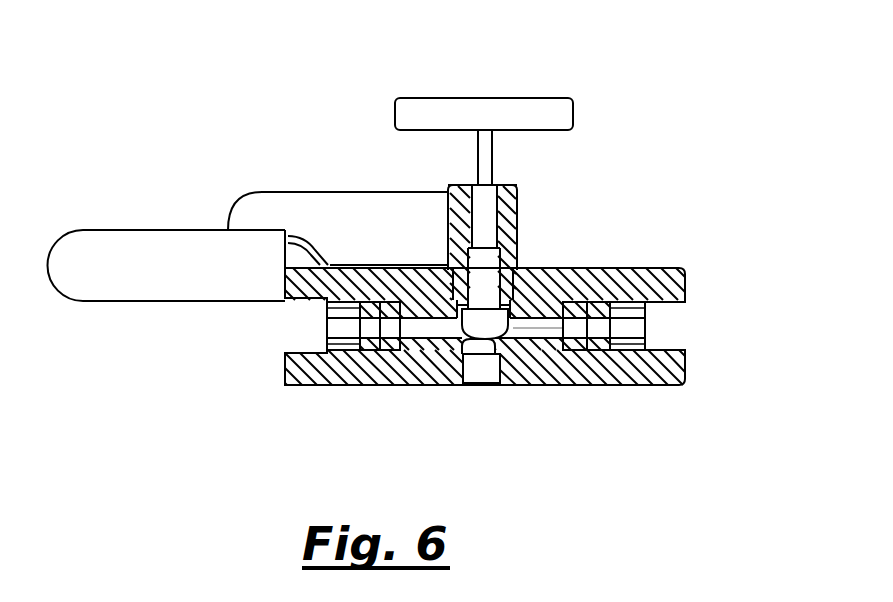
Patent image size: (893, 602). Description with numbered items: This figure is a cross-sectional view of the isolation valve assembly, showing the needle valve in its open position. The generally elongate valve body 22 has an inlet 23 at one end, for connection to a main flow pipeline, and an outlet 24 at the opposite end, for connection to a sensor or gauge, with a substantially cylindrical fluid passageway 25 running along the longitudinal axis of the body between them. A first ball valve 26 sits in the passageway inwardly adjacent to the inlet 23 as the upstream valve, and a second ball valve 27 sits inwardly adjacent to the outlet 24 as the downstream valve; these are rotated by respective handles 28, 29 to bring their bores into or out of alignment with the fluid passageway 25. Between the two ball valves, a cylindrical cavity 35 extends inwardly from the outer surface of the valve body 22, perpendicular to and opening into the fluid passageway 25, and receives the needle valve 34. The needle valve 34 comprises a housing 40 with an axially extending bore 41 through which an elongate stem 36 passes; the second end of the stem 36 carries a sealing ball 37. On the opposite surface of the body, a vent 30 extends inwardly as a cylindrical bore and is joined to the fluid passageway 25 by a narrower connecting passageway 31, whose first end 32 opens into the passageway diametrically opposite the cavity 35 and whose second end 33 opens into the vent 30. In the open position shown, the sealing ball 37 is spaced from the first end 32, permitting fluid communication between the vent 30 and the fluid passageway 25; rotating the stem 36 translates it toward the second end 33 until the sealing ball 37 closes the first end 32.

The valve body 22 is at (600, 262).
The inlet 23 is at (686, 338).
The outlet 24 is at (283, 335).
The fluid passageway 25 is at (538, 340).
The first ball valve 26 is at (593, 352).
The second ball valve 27 is at (380, 352).
The handle 28 is at (318, 205).
The handle 29 is at (153, 245).
The vent 30 is at (489, 392).
The connecting passageway 31 is at (478, 347).
The first end 32 is at (497, 318).
The second end 33 is at (472, 357).
The needle valve 34 is at (511, 172).
The cavity 35 is at (508, 308).
The stem 36 is at (472, 270).
The sealing ball 37 is at (480, 185).
The housing 40 is at (447, 185).
The bore 41 is at (497, 185).